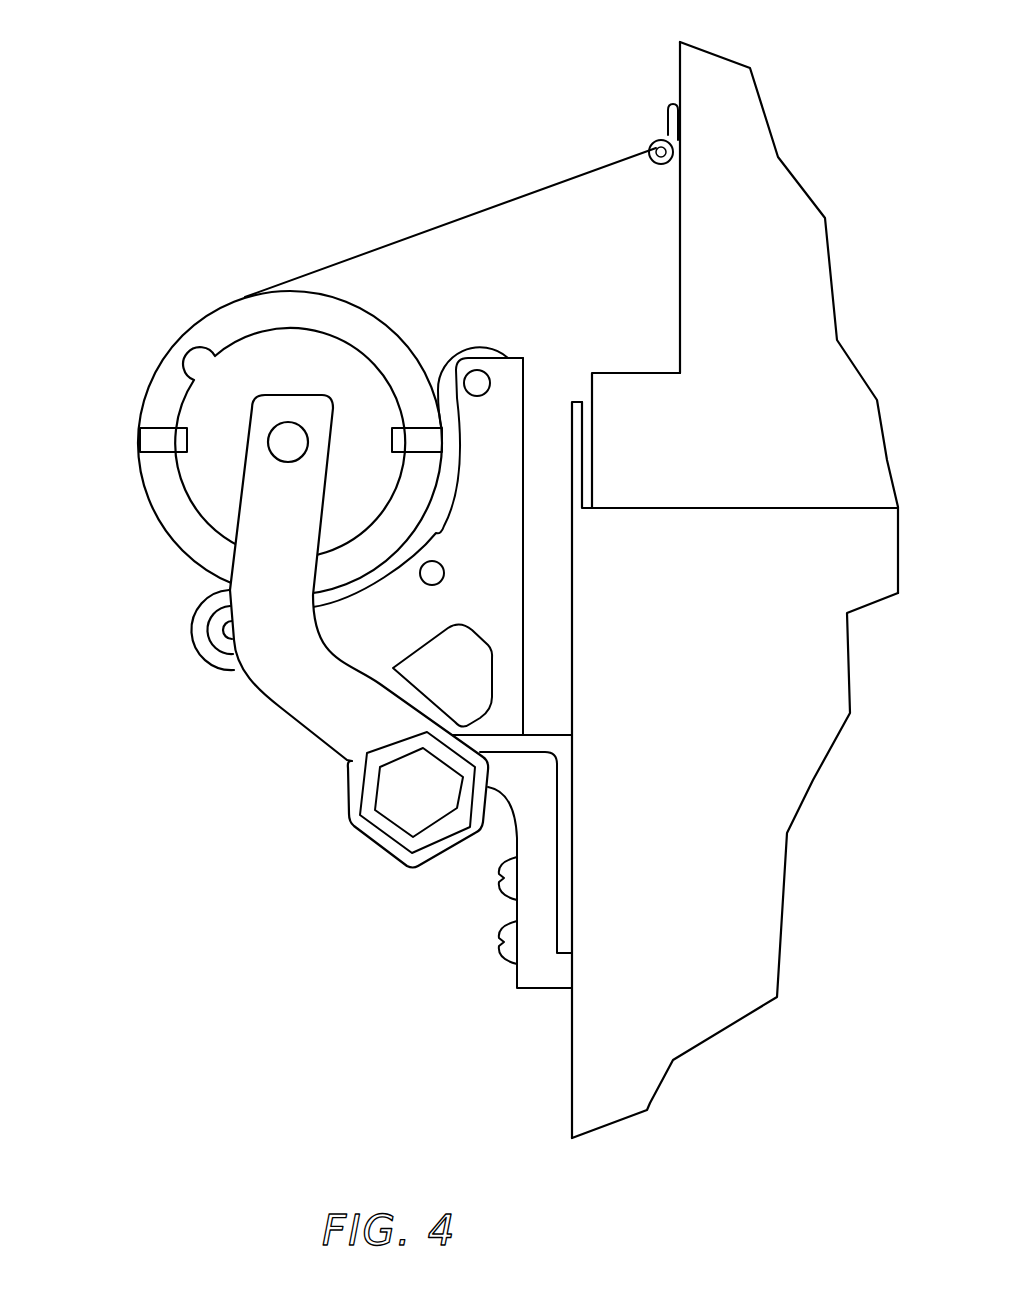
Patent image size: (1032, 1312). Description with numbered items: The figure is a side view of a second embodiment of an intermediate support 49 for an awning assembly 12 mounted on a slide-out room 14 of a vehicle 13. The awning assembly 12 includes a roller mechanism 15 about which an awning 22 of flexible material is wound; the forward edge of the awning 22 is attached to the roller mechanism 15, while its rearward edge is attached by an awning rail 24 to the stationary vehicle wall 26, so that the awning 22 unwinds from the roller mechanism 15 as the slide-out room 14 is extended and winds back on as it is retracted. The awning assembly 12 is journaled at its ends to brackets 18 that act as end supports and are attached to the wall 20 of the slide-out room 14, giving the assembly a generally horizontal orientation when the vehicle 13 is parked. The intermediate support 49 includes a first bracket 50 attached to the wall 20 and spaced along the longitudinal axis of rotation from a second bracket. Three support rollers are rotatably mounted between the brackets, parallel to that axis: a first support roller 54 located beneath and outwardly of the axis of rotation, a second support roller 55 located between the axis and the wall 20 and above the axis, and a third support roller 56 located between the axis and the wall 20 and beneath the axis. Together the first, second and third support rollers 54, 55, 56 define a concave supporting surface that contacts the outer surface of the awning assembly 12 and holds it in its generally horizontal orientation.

The awning assembly 12 is at (150, 349).
The vehicle 13 is at (777, 370).
The slide-out room 14 is at (690, 815).
The roller mechanism 15 is at (330, 330).
The brackets 18 is at (275, 705).
The wall 20 is at (572, 1072).
The awning 22 is at (490, 207).
The awning rail 24 is at (668, 116).
The vehicle wall 26 is at (680, 217).
The intermediate support 49 is at (528, 382).
The first bracket 50 is at (510, 490).
The first support roller 54 is at (194, 632).
The second support roller 55 is at (467, 343).
The third support roller 56 is at (408, 550).